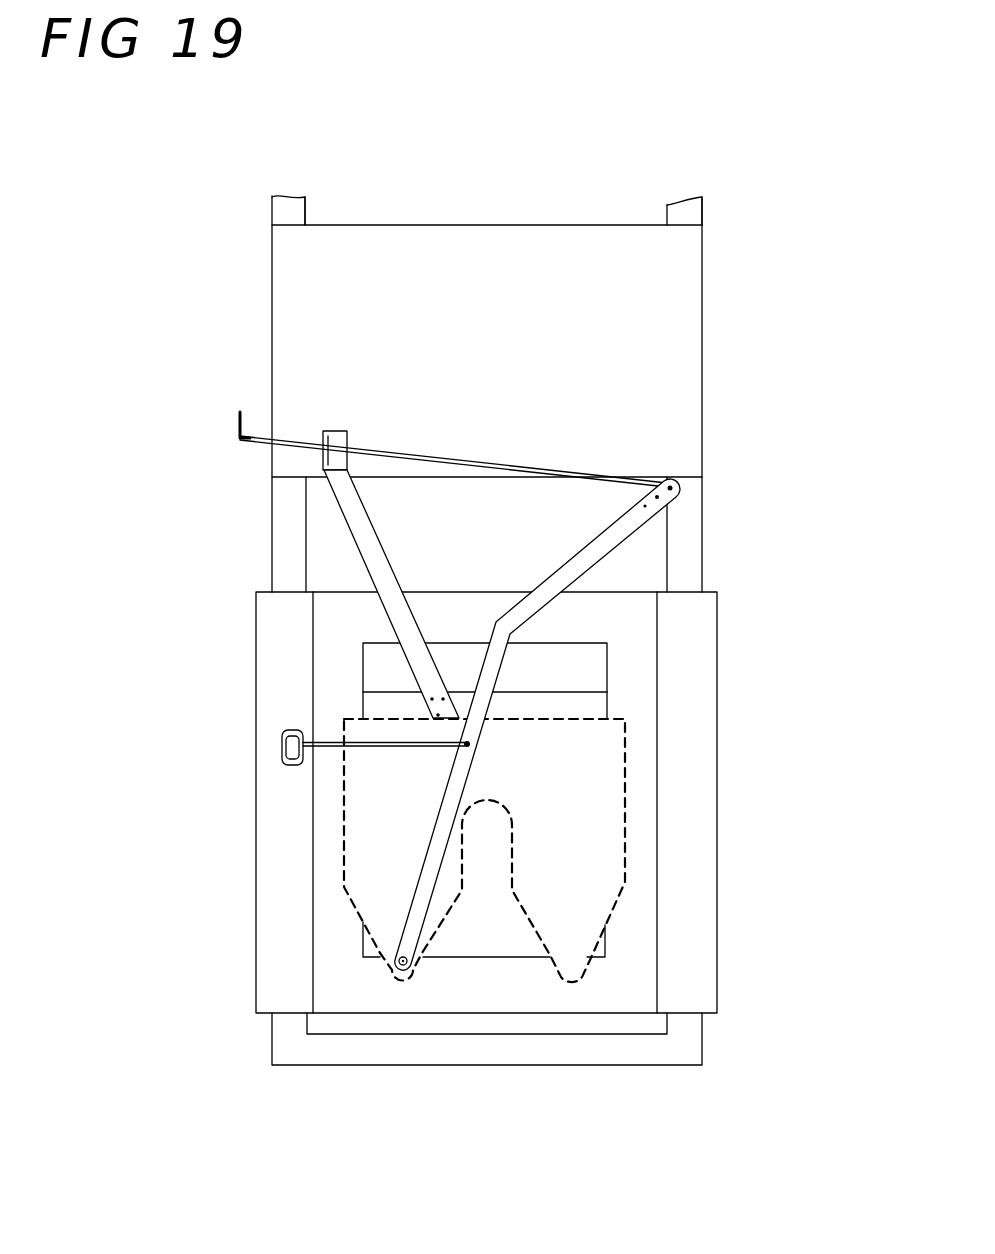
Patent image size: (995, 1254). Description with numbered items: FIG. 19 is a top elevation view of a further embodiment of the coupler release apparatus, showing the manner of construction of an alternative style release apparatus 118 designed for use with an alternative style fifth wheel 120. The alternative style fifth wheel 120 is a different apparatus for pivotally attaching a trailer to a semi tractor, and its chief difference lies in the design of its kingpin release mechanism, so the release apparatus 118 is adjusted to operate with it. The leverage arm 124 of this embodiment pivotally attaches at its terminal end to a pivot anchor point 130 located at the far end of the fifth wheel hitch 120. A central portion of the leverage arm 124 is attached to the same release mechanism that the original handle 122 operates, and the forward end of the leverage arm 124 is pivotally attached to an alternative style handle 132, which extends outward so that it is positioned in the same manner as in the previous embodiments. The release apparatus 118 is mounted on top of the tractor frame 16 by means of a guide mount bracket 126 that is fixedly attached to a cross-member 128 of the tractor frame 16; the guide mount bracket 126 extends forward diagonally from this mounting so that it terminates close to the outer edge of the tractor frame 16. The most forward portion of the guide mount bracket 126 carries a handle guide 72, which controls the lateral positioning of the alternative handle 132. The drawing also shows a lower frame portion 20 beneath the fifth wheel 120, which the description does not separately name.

The tractor frame 16 is at (267, 213).
The lower frame / base 20 is at (255, 840).
The handle guide 72 is at (318, 462).
The alternative style handle 132 is at (230, 425).
The alternative style release apparatus 118 is at (480, 720).
The guide mount bracket 126 is at (338, 508).
The leverage arm 124 is at (597, 557).
The cross-member 128 is at (595, 706).
The alternative style fifth wheel 120 is at (610, 782).
The original handle 122 is at (282, 744).
The pivot anchor point 130 is at (399, 960).